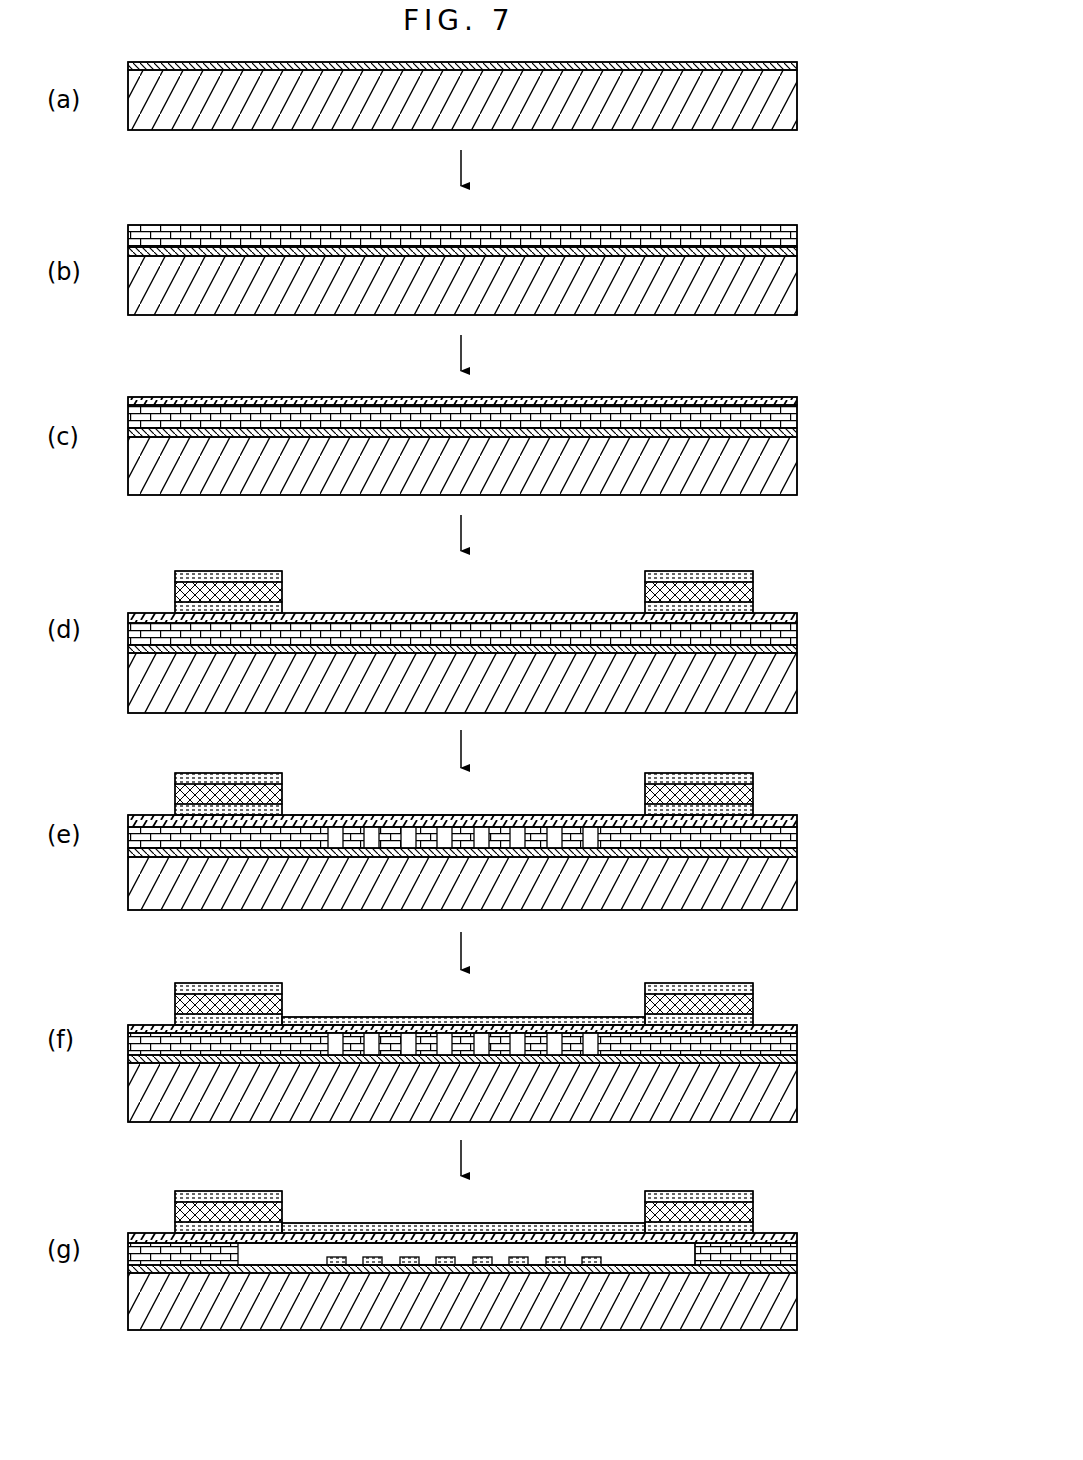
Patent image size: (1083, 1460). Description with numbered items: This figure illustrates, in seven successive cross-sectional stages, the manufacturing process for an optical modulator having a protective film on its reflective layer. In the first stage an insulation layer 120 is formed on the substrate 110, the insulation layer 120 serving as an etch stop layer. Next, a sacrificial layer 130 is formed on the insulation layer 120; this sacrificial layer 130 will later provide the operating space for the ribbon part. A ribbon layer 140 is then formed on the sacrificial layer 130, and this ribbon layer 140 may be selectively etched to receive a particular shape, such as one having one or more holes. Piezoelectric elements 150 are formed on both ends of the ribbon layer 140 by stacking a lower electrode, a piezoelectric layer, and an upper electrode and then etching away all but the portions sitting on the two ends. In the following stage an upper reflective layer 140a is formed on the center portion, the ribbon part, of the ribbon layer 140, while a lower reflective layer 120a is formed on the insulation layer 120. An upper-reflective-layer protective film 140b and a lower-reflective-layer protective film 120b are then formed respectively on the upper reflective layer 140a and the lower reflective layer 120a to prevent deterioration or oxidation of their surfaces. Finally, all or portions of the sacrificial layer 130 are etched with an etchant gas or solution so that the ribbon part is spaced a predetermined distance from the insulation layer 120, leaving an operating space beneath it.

The substrate 110 is at (790, 100).
The insulation layer 120 is at (800, 66).
The sacrificial layer 130 is at (800, 232).
The ribbon layer 140 is at (800, 398).
The piezoelectric element 150 is at (763, 574).
The lower reflective layer 120a is at (592, 842).
The lower-reflective-layer protective film 120b is at (622, 1055).
The upper reflective layer 140a is at (377, 814).
The upper-reflective-layer protective film 140b is at (532, 1017).